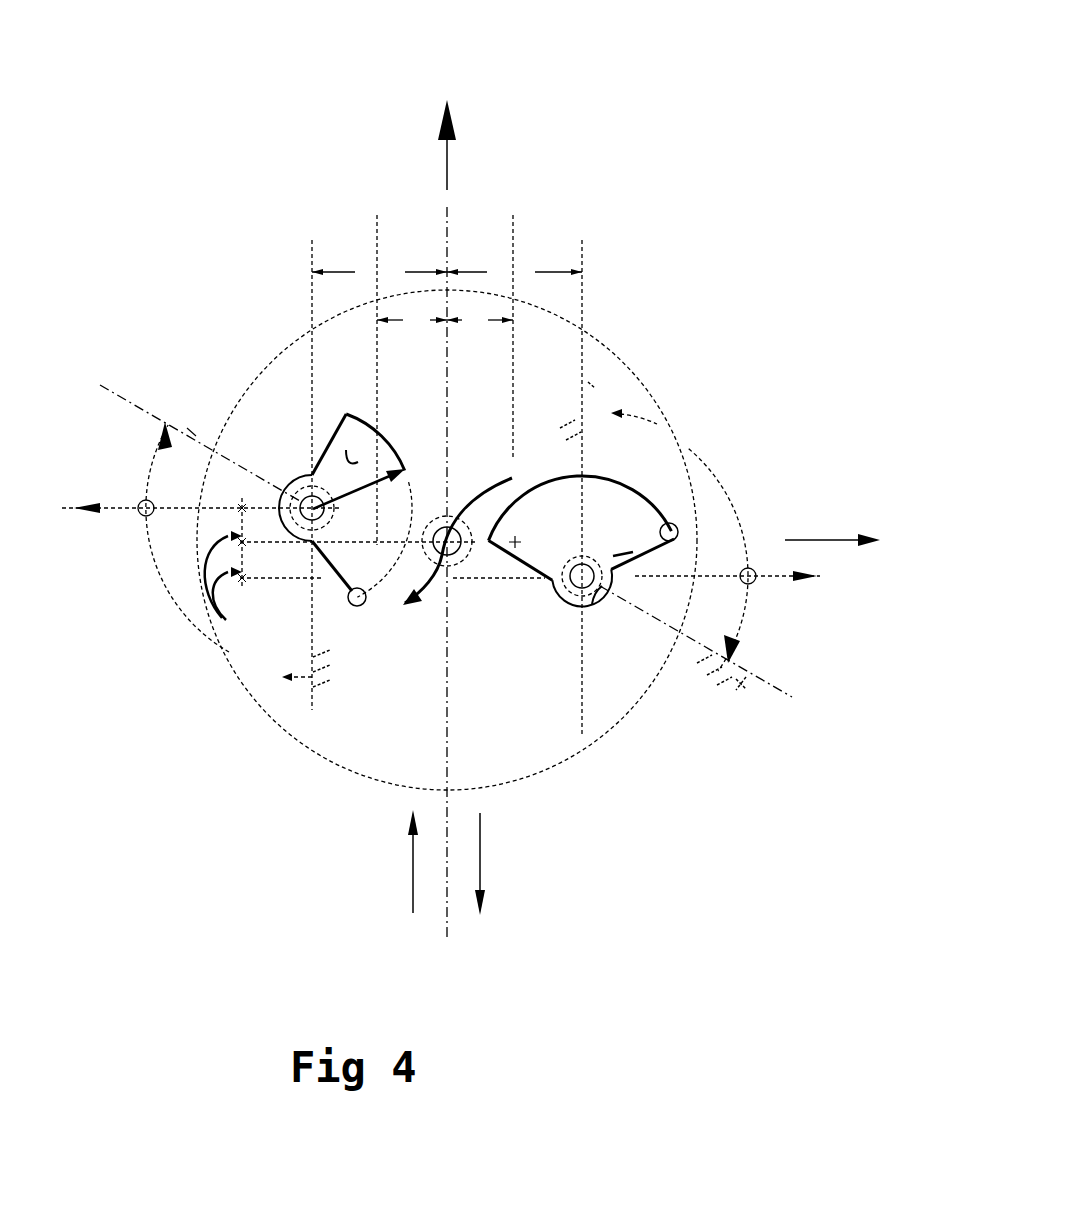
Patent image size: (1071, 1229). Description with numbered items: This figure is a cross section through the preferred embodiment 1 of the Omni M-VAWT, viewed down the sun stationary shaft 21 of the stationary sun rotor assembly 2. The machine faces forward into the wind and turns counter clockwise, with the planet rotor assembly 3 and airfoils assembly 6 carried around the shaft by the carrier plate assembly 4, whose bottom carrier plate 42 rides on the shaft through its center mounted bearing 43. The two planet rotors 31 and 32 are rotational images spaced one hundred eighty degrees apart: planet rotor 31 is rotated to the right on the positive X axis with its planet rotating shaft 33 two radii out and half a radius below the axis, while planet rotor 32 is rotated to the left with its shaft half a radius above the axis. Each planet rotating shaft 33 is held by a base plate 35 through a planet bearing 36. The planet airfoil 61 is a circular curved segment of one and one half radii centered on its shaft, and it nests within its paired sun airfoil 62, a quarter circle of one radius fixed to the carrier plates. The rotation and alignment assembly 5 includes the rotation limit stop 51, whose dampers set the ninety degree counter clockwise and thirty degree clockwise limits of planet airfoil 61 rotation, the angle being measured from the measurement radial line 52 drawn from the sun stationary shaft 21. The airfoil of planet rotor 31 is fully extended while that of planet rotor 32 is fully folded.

The preferred embodiment 1 is at (840, 94).
The sun rotor assembly 2 is at (451, 522).
The planet rotor assembly 3 is at (451, 522).
The carrier plate assembly 4 is at (451, 522).
The rotation and alignment assembly 5 is at (451, 522).
The airfoils assembly 6 is at (862, 163).
The sun stationary shaft 21 is at (452, 548).
The planet rotor 31 is at (582, 578).
The planet rotor 32 is at (312, 508).
The planet rotating shaft 33 is at (389, 614).
The base plate 35 is at (345, 452).
The planet bearing 36 is at (389, 614).
The bottom carrier plate 42 is at (283, 740).
The center mounted bearing 43 is at (519, 706).
The rotation limit stop 51 is at (748, 737).
The measurement radial line 52 is at (65, 518).
The planet airfoil 61 is at (354, 606).
The sun airfoil 62 is at (402, 615).